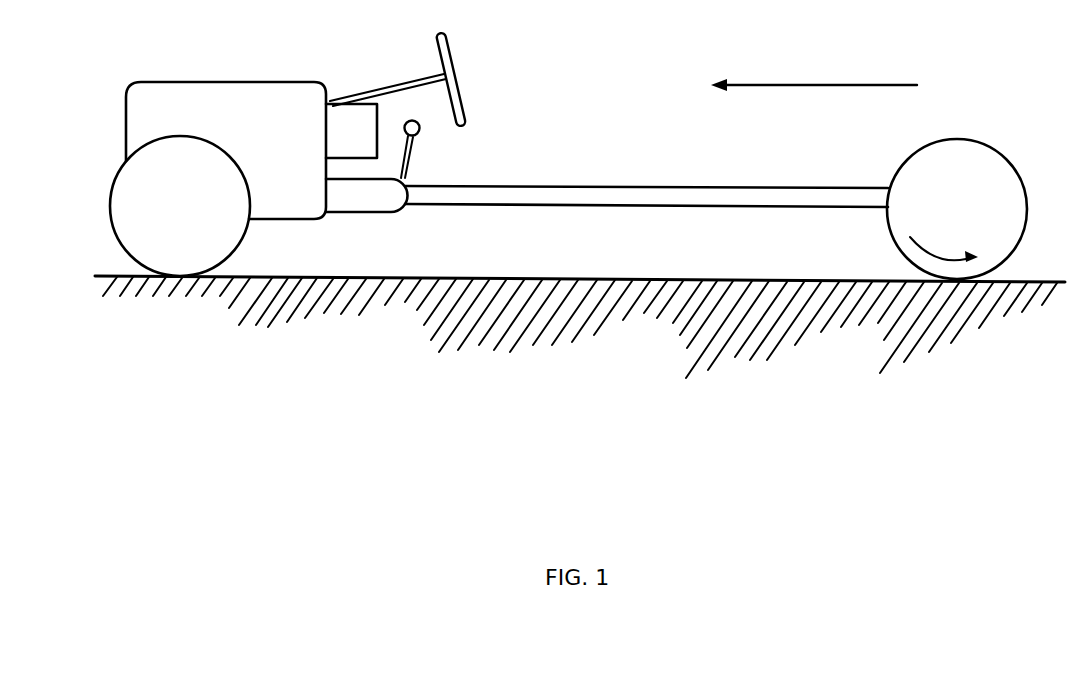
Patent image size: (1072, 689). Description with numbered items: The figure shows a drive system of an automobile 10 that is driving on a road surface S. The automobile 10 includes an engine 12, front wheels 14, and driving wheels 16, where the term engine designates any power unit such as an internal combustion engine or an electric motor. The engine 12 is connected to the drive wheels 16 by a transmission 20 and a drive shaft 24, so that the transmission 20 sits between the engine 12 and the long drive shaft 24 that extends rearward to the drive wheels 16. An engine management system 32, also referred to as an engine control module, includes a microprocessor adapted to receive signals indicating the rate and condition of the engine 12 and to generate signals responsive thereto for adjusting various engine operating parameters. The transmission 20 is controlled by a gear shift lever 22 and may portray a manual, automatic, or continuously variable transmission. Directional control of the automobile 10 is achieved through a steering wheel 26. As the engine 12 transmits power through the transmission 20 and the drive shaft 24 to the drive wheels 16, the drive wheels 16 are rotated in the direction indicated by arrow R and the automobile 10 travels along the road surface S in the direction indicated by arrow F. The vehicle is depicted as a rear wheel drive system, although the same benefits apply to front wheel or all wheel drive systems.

The automobile 10 is at (603, 95).
The engine 12 is at (267, 80).
The front wheels 14 is at (232, 235).
The driving wheels 16 is at (892, 235).
The transmission 20 is at (377, 203).
The gear shift lever 22 is at (411, 153).
The drive shaft 24 is at (705, 197).
The steering wheel 26 is at (450, 61).
The engine management system 32 is at (333, 132).
The arrow F is at (818, 85).
The arrow R is at (940, 234).
The road surface S is at (600, 277).